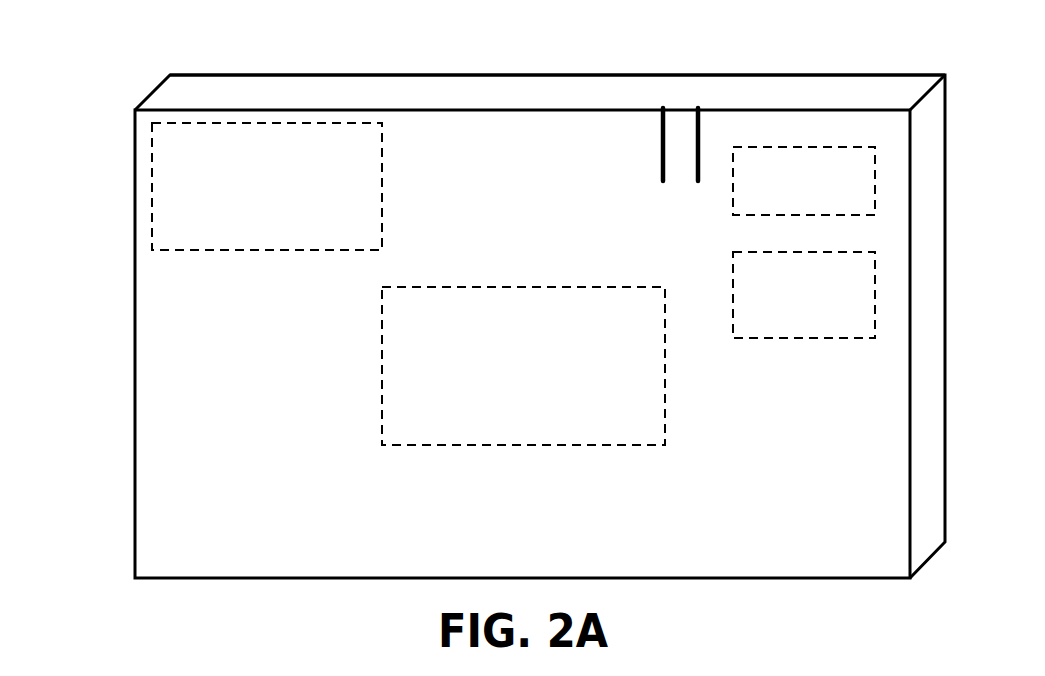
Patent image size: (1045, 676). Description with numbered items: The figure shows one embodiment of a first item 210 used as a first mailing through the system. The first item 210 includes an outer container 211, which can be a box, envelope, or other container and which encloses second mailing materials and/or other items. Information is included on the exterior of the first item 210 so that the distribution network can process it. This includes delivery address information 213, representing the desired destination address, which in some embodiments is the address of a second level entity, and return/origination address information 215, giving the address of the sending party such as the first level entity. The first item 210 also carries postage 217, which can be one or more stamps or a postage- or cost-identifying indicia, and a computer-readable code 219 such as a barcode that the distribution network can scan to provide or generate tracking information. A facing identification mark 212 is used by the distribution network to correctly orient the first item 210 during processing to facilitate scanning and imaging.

The first item 210 is at (78, 252).
The outer container 211 is at (478, 93).
The facing identification mark 212 is at (657, 147).
The delivery address information 213 is at (450, 287).
The return/origination address information 215 is at (382, 180).
The postage 217 is at (733, 198).
The computer-readable code 219 is at (768, 338).